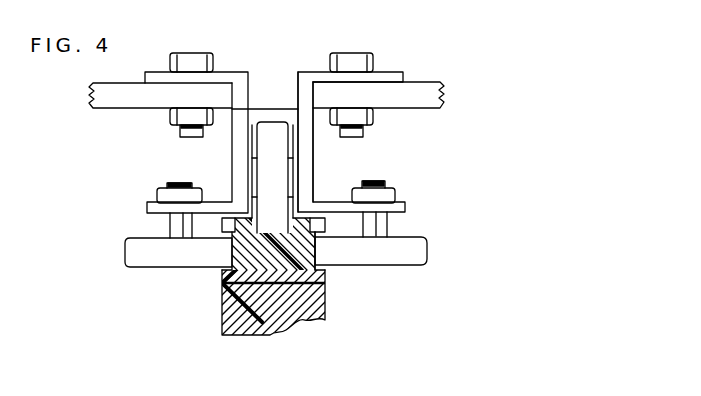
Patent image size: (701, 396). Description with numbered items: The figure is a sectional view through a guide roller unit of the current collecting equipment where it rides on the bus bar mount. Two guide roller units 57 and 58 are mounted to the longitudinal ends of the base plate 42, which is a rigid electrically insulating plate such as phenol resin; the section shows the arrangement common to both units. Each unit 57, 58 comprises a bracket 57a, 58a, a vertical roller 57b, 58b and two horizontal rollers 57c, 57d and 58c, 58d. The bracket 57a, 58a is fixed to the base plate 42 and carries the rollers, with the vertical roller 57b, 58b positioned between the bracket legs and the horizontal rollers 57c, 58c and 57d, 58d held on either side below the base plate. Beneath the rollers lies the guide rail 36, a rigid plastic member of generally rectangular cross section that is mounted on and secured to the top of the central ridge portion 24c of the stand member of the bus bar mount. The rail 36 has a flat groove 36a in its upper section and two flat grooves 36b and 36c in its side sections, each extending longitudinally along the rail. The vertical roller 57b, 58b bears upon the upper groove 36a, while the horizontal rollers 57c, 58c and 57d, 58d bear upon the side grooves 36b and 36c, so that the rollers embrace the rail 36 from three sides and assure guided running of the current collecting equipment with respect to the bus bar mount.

The guide roller unit 57 is at (302, 135).
The guide roller unit 58 is at (302, 135).
The bracket 57a is at (366, 142).
The bracket 58a is at (306, 152).
The vertical roller 57b is at (303, 127).
The vertical roller 58b is at (273, 128).
The horizontal roller 57c is at (428, 250).
The horizontal roller 58c is at (428, 247).
The horizontal roller 57d is at (162, 270).
The horizontal roller 58d is at (160, 258).
The base plate 42 is at (430, 88).
The guide rail 36 is at (308, 243).
The flat groove 36a is at (312, 222).
The flat groove 36b is at (316, 248).
The flat groove 36c is at (230, 252).
The central ridge portion 24c is at (318, 320).